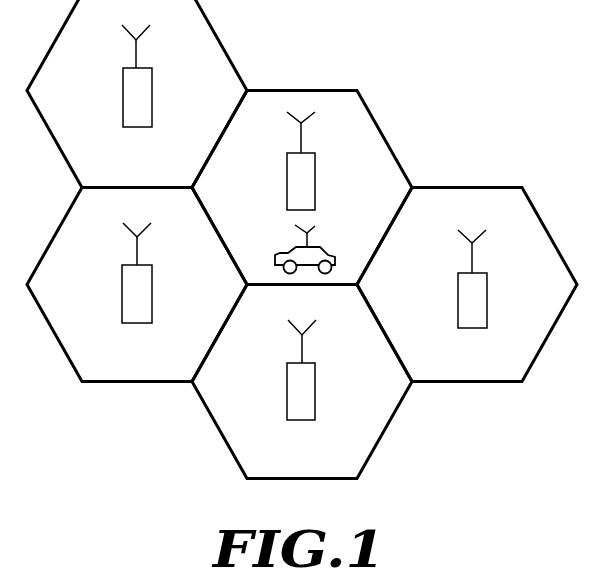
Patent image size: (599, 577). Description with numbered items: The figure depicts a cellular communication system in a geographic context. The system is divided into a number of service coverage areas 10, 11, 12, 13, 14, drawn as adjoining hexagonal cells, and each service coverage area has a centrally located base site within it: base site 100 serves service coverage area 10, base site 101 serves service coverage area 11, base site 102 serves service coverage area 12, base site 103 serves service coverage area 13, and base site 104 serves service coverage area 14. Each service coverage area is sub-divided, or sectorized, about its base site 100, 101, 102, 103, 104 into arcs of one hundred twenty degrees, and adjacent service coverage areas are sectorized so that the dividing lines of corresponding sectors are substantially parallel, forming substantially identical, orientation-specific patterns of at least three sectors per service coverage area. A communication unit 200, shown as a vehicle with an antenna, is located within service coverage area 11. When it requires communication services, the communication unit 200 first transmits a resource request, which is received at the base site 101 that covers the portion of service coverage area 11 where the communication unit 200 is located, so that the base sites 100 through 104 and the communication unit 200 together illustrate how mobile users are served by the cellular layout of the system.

The service coverage area 10 is at (108, 173).
The service coverage area 11 is at (258, 258).
The service coverage area 12 is at (108, 370).
The service coverage area 13 is at (272, 467).
The service coverage area 14 is at (435, 370).
The base site 100 is at (143, 65).
The base site 101 is at (308, 152).
The base site 102 is at (143, 263).
The base site 103 is at (308, 362).
The base site 104 is at (478, 272).
The communication unit 200 is at (309, 243).